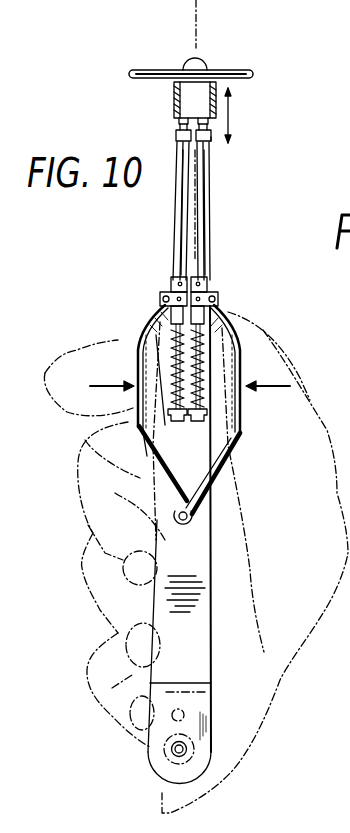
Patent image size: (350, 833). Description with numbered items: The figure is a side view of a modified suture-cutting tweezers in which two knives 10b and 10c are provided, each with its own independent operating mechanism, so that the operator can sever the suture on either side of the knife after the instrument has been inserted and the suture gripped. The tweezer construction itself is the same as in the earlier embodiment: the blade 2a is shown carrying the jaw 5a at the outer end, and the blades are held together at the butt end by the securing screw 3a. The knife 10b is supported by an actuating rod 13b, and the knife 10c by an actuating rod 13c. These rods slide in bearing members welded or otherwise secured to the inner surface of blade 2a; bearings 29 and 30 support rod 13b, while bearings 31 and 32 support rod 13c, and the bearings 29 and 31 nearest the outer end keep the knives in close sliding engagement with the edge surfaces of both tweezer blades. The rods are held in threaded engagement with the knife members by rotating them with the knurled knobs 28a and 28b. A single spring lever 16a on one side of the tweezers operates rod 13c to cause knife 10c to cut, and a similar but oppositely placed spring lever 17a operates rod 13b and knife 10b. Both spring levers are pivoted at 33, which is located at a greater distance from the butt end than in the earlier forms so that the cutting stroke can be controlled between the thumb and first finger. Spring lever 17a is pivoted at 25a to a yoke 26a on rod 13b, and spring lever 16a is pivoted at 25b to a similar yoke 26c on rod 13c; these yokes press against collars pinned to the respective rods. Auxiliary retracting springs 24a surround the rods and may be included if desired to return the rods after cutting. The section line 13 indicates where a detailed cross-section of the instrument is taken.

The tweezer blade 2a is at (209, 254).
The securing screw 3a is at (186, 753).
The jaw 5a is at (205, 62).
The knife 10b is at (218, 86).
The knife 10c is at (175, 99).
The section line 13 is at (190, 26).
The actuating rod 13b is at (206, 194).
The actuating rod 13c is at (181, 233).
The spring lever 16a is at (140, 352).
The spring lever 17a is at (236, 356).
The auxiliary retracting spring 24a is at (180, 373).
The pivot 25a is at (218, 300).
The pivot 25b is at (162, 300).
The yoke 26a is at (208, 288).
The yoke 26c is at (173, 288).
The knurled knob 28a is at (195, 417).
The knurled knob 28b is at (170, 417).
The bearing 29 is at (210, 139).
The bearing 30 is at (202, 313).
The bearing 31 is at (176, 134).
The bearing 32 is at (174, 316).
The pivot 33 is at (190, 517).